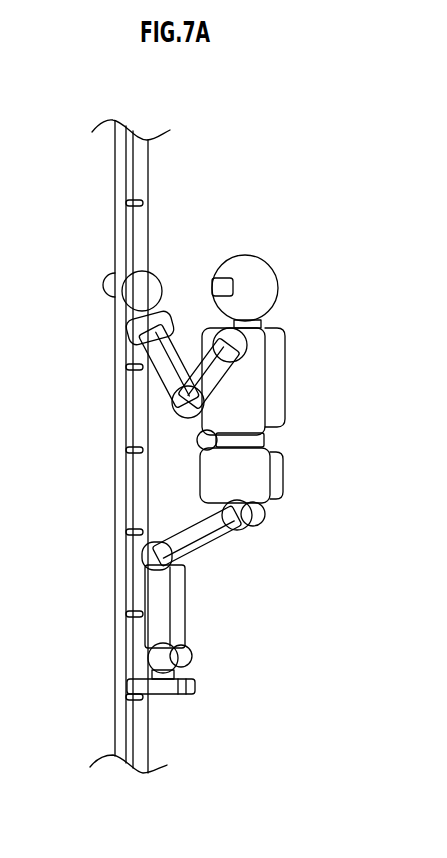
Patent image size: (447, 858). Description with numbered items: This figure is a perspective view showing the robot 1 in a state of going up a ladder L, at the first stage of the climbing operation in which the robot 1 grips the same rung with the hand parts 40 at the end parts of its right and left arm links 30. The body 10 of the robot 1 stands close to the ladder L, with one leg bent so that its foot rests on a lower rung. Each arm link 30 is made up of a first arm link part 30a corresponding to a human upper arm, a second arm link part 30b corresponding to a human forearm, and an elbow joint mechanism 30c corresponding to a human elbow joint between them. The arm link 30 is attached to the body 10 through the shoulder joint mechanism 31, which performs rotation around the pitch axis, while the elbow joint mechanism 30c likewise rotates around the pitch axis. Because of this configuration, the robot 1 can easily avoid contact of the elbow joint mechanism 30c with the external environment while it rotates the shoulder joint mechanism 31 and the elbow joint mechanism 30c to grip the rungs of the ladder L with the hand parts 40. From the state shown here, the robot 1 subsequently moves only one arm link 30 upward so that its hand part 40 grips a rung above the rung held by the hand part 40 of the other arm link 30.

The robot 1 is at (187, 458).
The body (trunk) 10 is at (268, 402).
The arm link 30 is at (130, 367).
The first arm link part 30a is at (197, 422).
The second arm link part 30b is at (163, 375).
The elbow joint mechanism 30c is at (183, 403).
The shoulder joint mechanism 31 is at (237, 345).
The hand part 40 is at (152, 277).
The ladder L is at (107, 602).